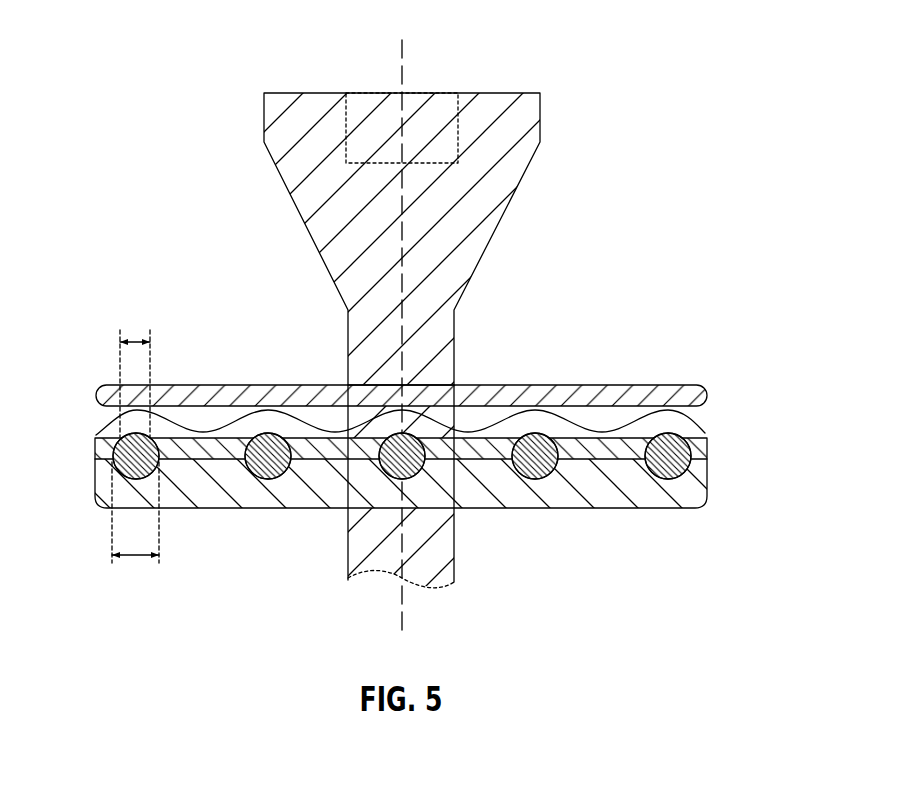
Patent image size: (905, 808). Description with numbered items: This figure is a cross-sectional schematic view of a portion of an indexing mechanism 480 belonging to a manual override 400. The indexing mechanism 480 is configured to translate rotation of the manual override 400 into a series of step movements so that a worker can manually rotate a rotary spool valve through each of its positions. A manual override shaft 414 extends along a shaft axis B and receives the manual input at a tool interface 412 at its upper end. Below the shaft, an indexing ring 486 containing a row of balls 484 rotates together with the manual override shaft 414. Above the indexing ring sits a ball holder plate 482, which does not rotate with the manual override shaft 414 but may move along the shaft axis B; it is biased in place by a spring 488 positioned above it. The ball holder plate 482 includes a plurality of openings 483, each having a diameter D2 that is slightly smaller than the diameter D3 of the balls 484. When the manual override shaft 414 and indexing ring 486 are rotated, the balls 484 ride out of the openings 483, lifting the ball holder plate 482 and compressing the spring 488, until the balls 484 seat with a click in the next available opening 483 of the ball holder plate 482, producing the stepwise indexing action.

The manual override 400 is at (180, 117).
The tool interface 412 is at (346, 118).
The manual override shaft 414 is at (378, 348).
The shaft axis B is at (402, 62).
The indexing mechanism 480 is at (740, 522).
The ball holder plate 482 is at (707, 445).
The openings 483 is at (97, 434).
The balls 484 is at (665, 468).
The indexing ring 486 is at (590, 490).
The spring 488 is at (699, 431).
The opening diameter D2 is at (133, 342).
The ball diameter D3 is at (135, 557).